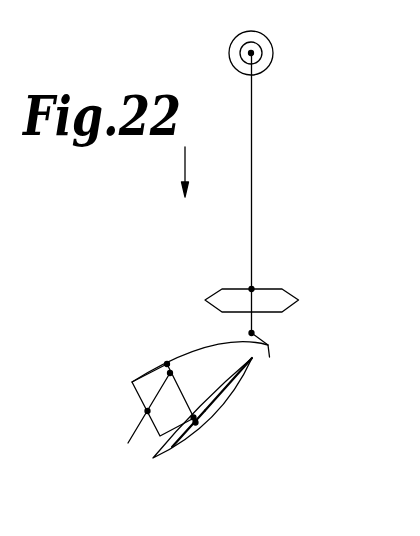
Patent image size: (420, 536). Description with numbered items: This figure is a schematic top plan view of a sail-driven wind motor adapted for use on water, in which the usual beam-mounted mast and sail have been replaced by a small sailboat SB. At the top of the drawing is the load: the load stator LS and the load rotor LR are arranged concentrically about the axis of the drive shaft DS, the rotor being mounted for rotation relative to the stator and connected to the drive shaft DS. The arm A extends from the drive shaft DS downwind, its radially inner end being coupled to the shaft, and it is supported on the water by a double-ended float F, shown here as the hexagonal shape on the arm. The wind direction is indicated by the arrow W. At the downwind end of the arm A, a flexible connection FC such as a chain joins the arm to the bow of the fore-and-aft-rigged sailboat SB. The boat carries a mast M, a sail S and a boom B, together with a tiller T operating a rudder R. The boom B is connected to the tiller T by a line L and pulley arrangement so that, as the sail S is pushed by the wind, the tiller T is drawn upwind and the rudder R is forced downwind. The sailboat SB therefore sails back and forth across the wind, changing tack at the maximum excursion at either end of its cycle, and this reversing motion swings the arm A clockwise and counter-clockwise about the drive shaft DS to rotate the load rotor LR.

The drive shaft DS is at (268, 46).
The load rotor LR is at (263, 53).
The load stator LS is at (267, 70).
The arm A is at (252, 133).
The direction of weight W is at (197, 172).
The double-ended float F is at (268, 289).
The flexible connection FC is at (260, 340).
The sailboat SB is at (270, 357).
The line L is at (170, 374).
The tiller T is at (158, 392).
The rudder R is at (137, 430).
The sail S is at (220, 418).
The mast M is at (257, 363).
The boom B is at (168, 445).